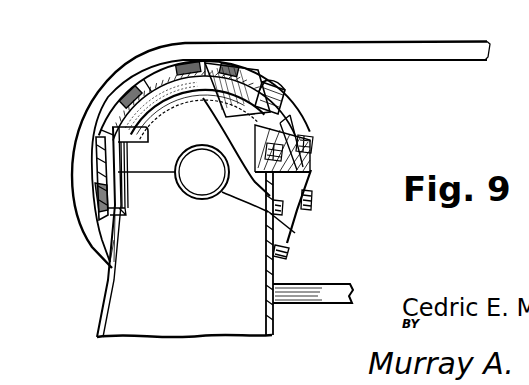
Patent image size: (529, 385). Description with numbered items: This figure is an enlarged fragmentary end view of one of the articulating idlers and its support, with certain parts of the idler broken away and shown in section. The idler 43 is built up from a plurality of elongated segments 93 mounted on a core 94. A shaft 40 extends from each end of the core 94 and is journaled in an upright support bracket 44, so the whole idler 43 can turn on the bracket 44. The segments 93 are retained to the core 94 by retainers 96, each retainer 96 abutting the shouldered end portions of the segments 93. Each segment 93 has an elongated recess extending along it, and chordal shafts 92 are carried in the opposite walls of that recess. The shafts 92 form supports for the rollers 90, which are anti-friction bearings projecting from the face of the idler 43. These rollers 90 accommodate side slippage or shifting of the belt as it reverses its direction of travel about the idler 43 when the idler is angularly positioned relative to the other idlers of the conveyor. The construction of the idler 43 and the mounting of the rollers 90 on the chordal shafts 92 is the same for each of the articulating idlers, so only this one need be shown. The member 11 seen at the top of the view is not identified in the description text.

The arm bar 11 is at (447, 45).
The shaft 40 is at (182, 180).
The bracket stud 43 is at (290, 120).
The plate 44 is at (127, 288).
The bolts 90 is at (233, 61).
The clamp bolt 92 is at (294, 124).
The ring segments 93 is at (110, 112).
The wedge lip 94 is at (247, 176).
The ring 96 is at (203, 100).